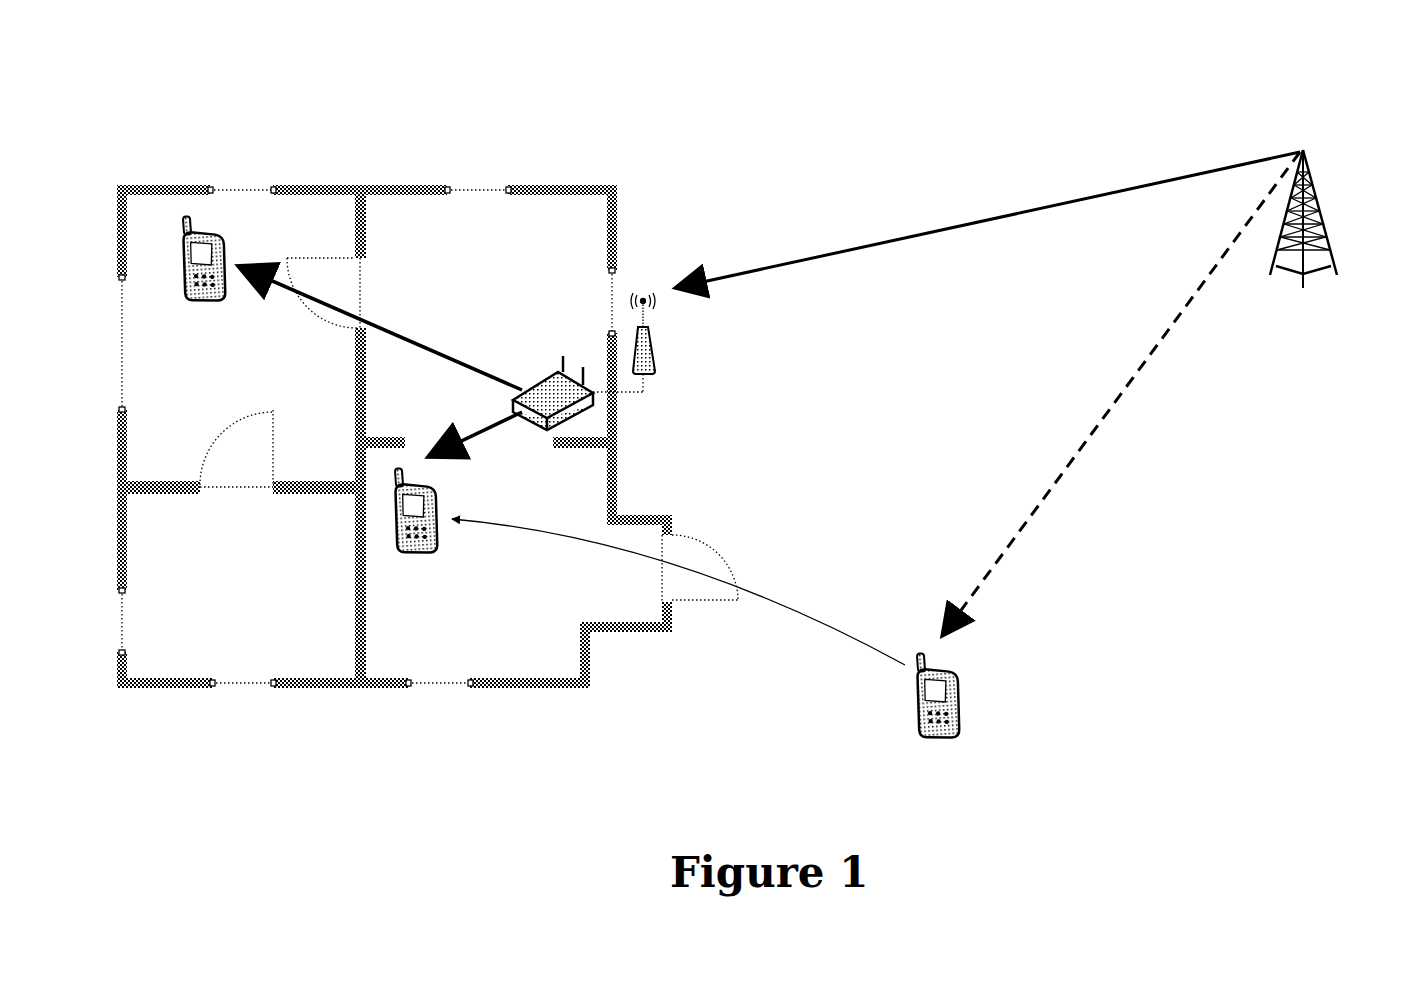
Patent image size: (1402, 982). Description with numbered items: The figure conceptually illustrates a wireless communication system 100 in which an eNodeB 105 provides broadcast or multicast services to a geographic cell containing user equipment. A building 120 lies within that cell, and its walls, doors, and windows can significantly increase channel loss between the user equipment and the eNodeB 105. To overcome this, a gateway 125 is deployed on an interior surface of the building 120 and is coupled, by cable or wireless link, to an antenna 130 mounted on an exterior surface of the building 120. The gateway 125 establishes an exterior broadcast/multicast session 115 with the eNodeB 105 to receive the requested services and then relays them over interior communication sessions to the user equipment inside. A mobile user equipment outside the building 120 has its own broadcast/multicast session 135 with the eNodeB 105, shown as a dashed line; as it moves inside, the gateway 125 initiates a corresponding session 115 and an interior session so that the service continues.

The wireless communication system 100 is at (1228, 81).
The eNodeB 105 is at (1325, 245).
The broadcast/multicast session 115 is at (925, 232).
The building 120 is at (409, 185).
The gateway 125 is at (545, 372).
The antenna 130 is at (652, 375).
The broadcast/multicast session 135 is at (1058, 478).